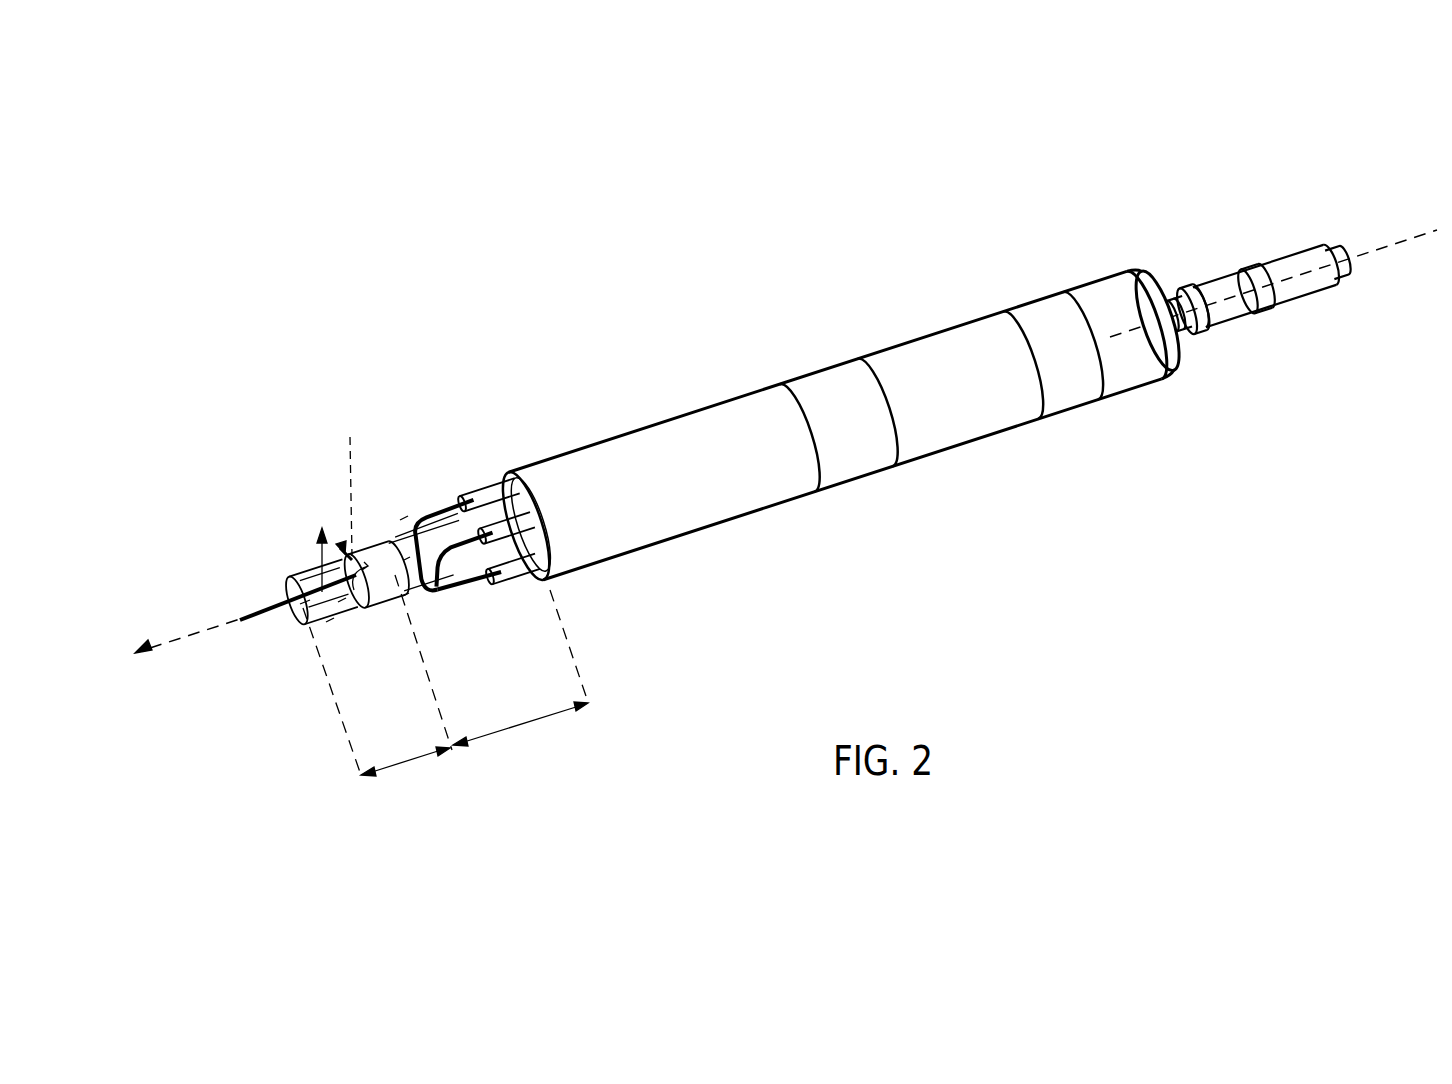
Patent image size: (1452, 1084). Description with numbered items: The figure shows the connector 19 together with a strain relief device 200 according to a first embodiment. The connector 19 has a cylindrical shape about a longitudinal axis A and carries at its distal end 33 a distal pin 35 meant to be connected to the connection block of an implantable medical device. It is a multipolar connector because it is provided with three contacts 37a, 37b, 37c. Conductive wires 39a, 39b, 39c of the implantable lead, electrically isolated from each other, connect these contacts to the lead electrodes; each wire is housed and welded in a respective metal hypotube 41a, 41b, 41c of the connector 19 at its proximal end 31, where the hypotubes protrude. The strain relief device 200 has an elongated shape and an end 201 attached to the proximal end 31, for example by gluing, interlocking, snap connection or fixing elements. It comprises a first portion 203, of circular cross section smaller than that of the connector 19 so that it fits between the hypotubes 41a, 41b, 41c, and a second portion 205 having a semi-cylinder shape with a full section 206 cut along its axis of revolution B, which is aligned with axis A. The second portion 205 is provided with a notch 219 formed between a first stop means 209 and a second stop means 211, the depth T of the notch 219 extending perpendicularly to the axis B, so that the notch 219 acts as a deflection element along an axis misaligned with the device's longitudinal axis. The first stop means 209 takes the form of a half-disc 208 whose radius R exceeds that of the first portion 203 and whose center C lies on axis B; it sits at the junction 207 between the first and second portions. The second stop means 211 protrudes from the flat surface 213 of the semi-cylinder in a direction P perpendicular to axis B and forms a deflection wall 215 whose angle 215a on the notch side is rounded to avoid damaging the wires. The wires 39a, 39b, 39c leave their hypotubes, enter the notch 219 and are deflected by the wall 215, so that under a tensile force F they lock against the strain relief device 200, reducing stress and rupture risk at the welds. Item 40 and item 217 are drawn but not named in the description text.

The connector 19 is at (988, 435).
The proximal end 31 is at (532, 477).
The distal end 33 is at (1183, 350).
The distal pin 35 is at (1315, 286).
The contact 37a is at (748, 418).
The contact 37b is at (892, 372).
The contact 37c is at (1032, 325).
The conductive wire 39a is at (437, 523).
The conductive wire 39b is at (445, 500).
The conductive wire 39c is at (484, 586).
The needle 40 is at (241, 620).
The metal hypotube 41a is at (488, 493).
The metal hypotube 41b is at (538, 507).
The metal hypotube 41c is at (540, 582).
The strain relief device 200 is at (460, 563).
The end 201 is at (545, 546).
The first portion 203 is at (530, 724).
The second portion 205 is at (408, 764).
The semi-cylinder 206 is at (340, 602).
The junction 207 is at (402, 518).
The half-disc 208 is at (384, 590).
The first stop means 209 is at (340, 541).
The second stop means 211 is at (313, 564).
The flat surface 213 is at (297, 607).
The deflection wall 215 is at (300, 584).
The angle 215a is at (328, 624).
The lumen 217 is at (293, 604).
The notch 219 is at (346, 553).
The axis A is at (1373, 248).
The axis of revolution B is at (404, 597).
The center C is at (407, 560).
The force F is at (143, 631).
The direction P is at (317, 556).
The radius R is at (385, 545).
The depth T is at (343, 479).